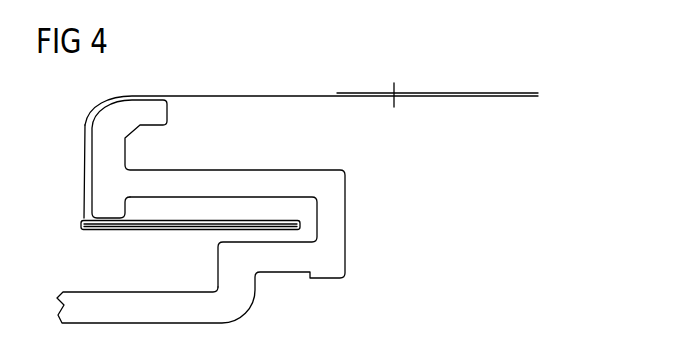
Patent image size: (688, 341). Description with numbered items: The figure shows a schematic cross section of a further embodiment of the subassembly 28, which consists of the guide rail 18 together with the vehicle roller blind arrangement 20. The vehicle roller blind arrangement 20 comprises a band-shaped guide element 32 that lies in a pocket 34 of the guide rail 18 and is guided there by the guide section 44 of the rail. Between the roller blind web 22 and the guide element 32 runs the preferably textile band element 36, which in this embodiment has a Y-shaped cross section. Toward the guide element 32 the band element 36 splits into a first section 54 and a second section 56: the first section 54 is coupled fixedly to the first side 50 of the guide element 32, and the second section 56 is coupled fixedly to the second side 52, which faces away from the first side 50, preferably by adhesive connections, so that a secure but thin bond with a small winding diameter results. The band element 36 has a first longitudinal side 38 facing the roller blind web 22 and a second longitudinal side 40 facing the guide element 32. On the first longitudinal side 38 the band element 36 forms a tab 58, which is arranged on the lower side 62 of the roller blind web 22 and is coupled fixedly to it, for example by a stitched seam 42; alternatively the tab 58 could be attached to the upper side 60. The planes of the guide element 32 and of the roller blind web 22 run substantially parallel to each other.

The guide rail 18 is at (340, 262).
The vehicle roller blind arrangement 20 is at (357, 79).
The roller blind web 22 is at (505, 93).
The subassembly 28 is at (522, 170).
The guide element 32 is at (182, 229).
The pocket 34 is at (307, 233).
The band element 36 is at (222, 95).
The first longitudinal side 38 is at (406, 97).
The second longitudinal side 40 is at (157, 229).
The stitched seam 42 is at (383, 100).
The guide section 44 is at (92, 200).
The first side 50 is at (168, 222).
The second side 52 is at (132, 228).
The first section 54 is at (268, 222).
The second section 56 is at (283, 232).
The tab 58 is at (328, 97).
The upper side 60 is at (440, 92).
The lower side 62 is at (457, 97).